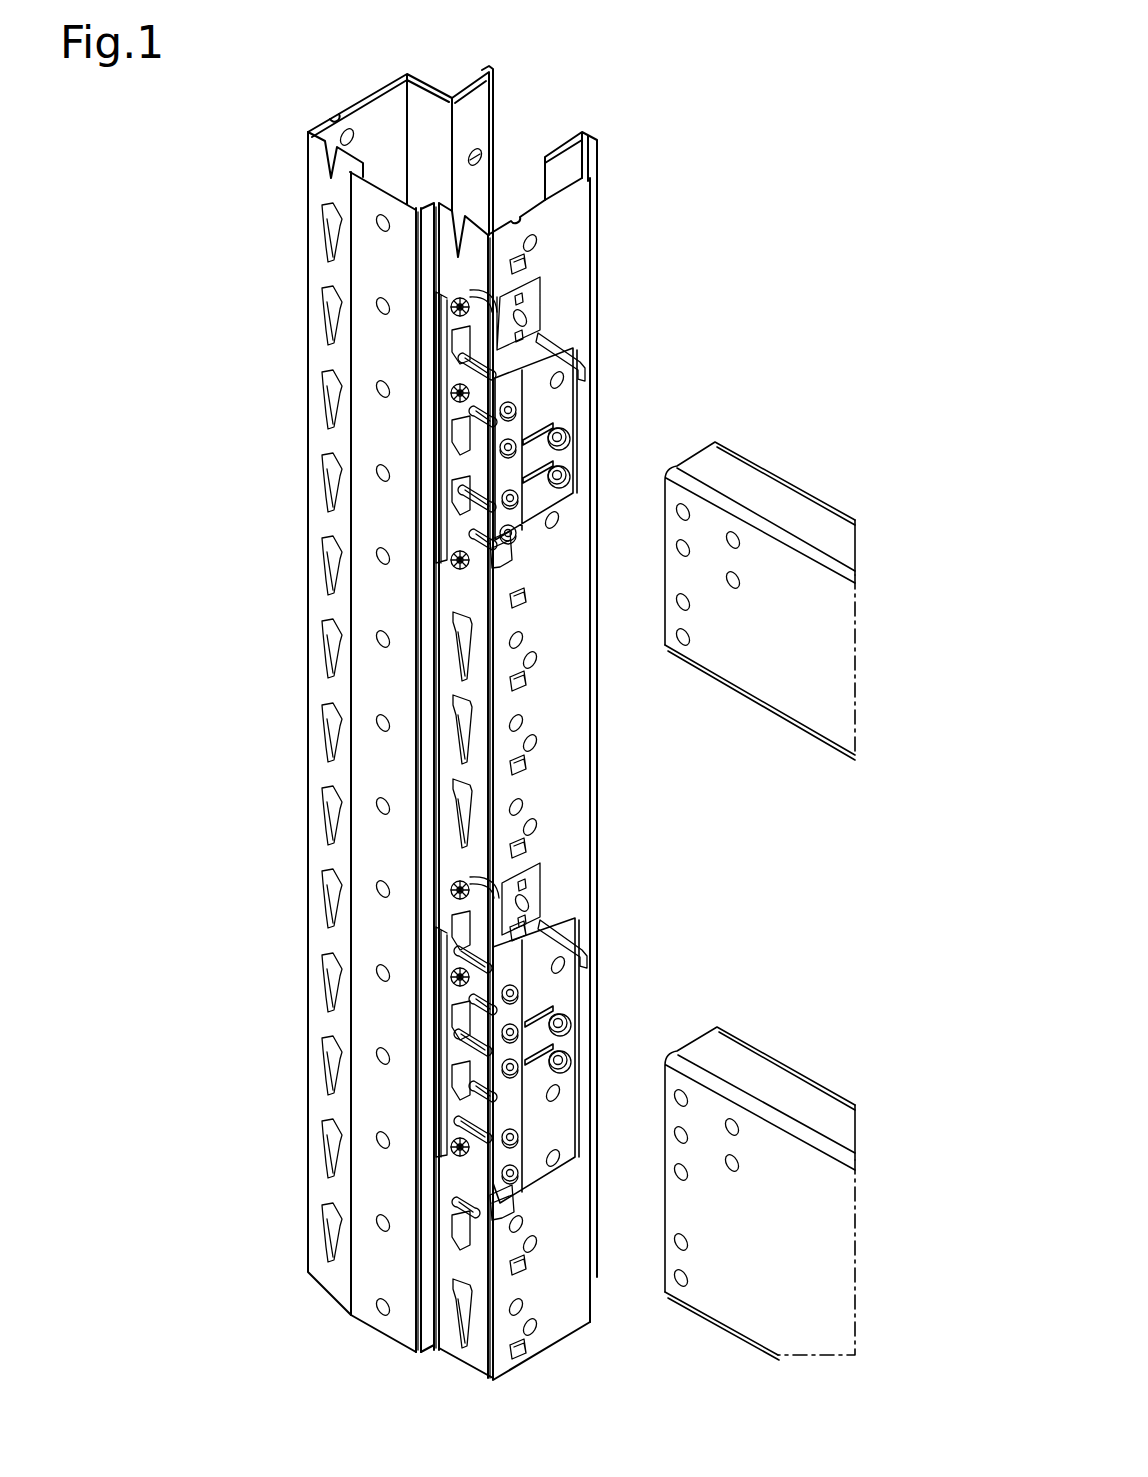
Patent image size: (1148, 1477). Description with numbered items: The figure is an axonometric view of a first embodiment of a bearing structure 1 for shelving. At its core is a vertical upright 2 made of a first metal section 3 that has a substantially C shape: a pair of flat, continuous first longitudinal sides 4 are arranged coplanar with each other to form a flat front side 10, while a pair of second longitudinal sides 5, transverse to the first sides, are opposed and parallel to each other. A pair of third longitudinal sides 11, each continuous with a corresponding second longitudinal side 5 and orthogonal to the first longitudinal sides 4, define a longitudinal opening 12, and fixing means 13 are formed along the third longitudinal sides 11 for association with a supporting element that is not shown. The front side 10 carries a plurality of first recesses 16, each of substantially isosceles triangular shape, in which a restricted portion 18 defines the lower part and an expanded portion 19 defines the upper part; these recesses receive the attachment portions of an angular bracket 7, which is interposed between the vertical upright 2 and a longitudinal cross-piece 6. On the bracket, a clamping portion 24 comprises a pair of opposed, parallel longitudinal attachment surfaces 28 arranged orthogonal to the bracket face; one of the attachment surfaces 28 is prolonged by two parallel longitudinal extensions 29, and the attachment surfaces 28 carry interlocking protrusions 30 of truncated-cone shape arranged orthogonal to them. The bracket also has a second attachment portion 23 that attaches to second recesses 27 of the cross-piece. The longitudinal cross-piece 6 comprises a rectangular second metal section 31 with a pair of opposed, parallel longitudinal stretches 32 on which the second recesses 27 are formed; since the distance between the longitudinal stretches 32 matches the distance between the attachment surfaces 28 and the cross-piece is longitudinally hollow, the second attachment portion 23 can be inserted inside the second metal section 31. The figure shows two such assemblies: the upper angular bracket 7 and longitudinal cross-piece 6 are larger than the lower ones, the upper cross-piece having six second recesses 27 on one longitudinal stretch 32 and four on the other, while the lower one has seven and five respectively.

The bearing structure for shelving 1 is at (838, 73).
The vertical upright 2 is at (346, 97).
The first metal section 3 is at (309, 293).
The first longitudinal side 4 is at (312, 597).
The second longitudinal side 5 is at (372, 118).
The longitudinal cross-piece 6 is at (812, 742).
The angular bracket 7 is at (586, 361).
The front side 10 is at (383, 923).
The third longitudinal side 11 is at (466, 120).
The longitudinal opening 12 is at (492, 100).
The fixing means 13 is at (483, 157).
The first recess 16 is at (326, 726).
The restricted portion 18 is at (326, 166).
The expanded portion 19 is at (330, 226).
The second attachment portion 23 is at (542, 511).
The clamping portion 24 is at (522, 266).
The second recess 27 is at (683, 548).
The longitudinal attachment surface 28 is at (545, 338).
The longitudinal extension 29 is at (568, 440).
The interlocking protrusion 30 is at (518, 410).
The second metal section 31 is at (858, 552).
The longitudinal stretch 32 is at (806, 486).